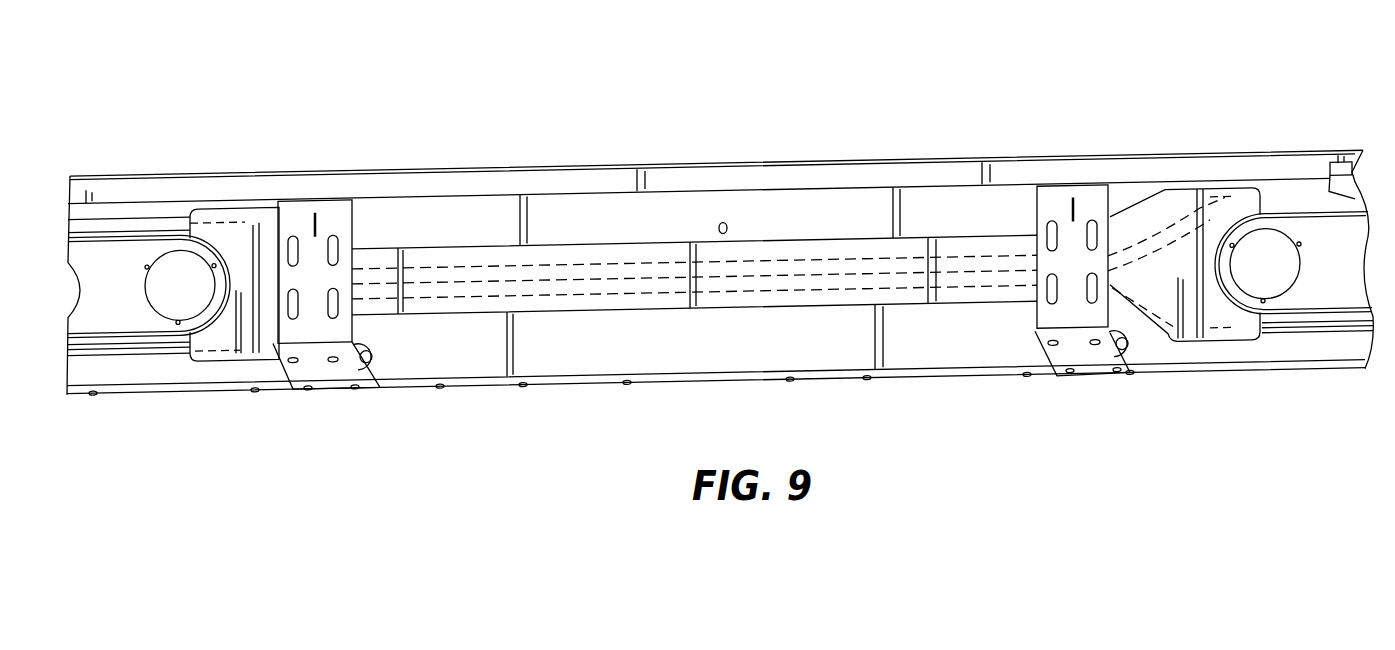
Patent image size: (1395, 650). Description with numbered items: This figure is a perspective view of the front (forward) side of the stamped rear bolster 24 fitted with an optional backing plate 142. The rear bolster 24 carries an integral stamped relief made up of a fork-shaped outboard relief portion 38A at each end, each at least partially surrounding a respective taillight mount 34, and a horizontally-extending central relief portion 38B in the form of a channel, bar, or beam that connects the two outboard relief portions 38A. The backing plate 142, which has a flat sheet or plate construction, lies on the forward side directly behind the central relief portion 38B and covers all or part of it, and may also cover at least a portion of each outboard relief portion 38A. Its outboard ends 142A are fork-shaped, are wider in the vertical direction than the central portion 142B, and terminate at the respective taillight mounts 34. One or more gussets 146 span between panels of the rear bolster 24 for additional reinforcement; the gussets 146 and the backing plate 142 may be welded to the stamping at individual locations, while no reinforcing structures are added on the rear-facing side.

The rear bolster 24 is at (1196, 116).
The outboard relief portion 38A is at (132, 236).
The central relief portion 38B is at (767, 262).
The gusset 146 is at (323, 231).
The backing plate 142 is at (703, 332).
The outboard end of the backing plate 142A is at (703, 332).
The central portion of the backing plate 142B is at (843, 296).
The taillight mount 34 is at (147, 318).